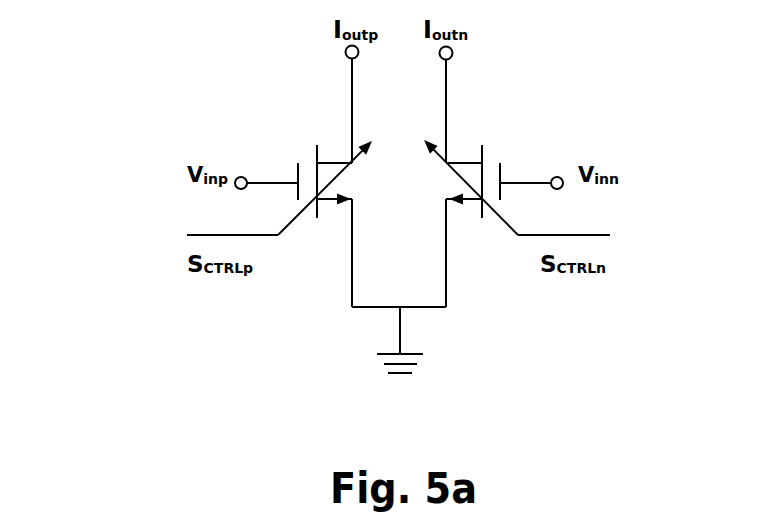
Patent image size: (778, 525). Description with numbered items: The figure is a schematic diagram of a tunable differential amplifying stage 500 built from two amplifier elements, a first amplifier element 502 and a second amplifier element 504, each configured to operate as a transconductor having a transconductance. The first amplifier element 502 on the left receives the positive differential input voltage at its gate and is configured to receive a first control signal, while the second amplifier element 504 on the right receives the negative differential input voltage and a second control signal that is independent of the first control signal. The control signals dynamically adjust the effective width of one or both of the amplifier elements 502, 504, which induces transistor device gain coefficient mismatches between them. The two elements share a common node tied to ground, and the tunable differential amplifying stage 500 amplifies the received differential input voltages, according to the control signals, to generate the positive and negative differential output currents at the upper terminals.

The first amplifier element 502 is at (292, 137).
The second amplifier element 504 is at (504, 137).
The tunable differential amplifying stage 500 is at (399, 210).